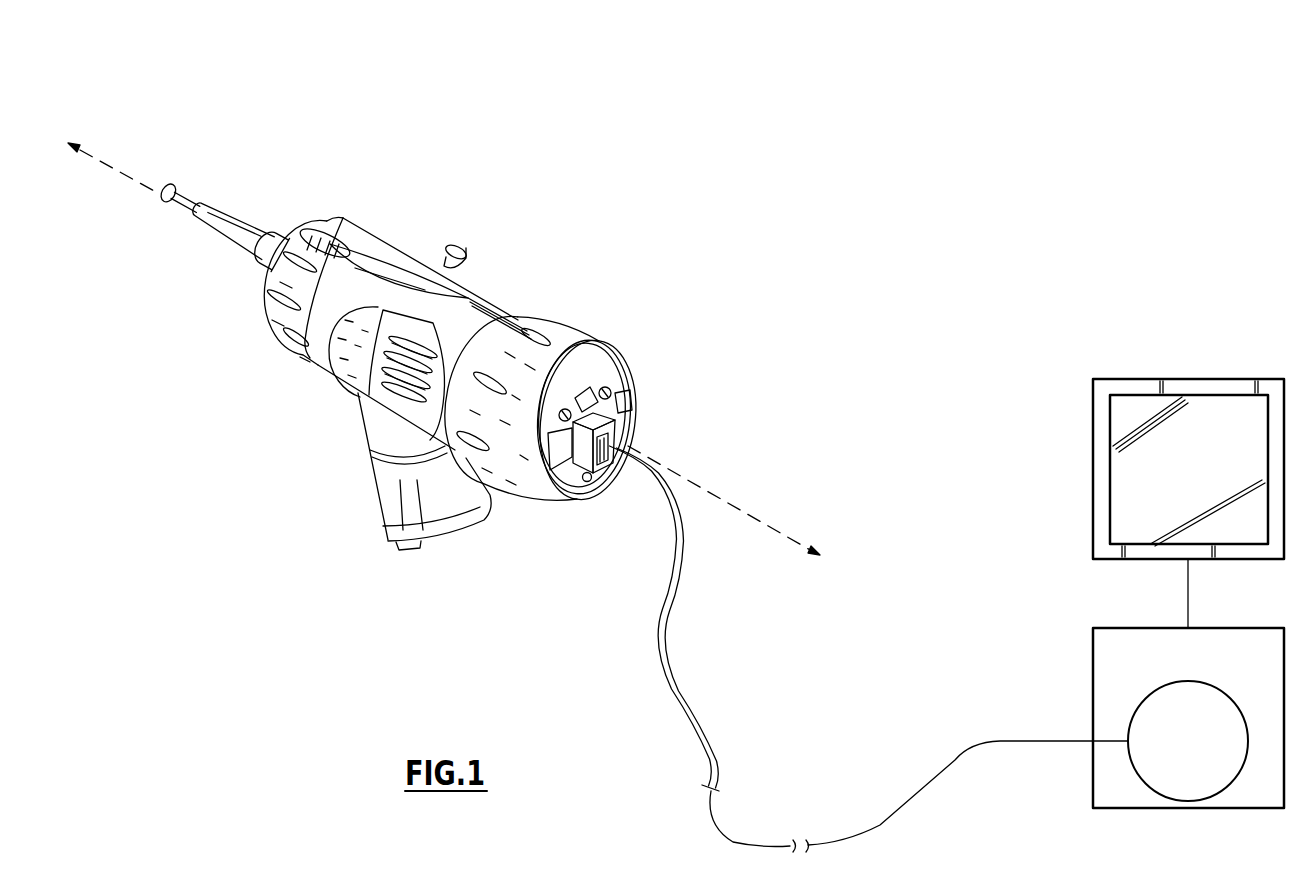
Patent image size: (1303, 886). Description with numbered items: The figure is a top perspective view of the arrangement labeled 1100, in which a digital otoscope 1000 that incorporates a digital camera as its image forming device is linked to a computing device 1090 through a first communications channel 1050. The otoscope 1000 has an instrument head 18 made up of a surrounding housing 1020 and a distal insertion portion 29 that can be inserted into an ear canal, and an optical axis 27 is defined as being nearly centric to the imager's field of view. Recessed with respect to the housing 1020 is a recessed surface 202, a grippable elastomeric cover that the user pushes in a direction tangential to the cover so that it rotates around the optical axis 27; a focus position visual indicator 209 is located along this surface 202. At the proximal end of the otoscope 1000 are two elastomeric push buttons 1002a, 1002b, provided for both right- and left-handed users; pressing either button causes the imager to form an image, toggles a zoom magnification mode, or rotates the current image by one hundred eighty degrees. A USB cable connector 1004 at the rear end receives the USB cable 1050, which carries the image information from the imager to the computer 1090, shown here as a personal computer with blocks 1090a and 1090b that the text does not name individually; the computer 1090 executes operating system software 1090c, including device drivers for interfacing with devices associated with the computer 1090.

The surgical system 1100 is at (240, 61).
The optical axis 27 is at (122, 175).
The instrument head 18 is at (399, 260).
The digital otoscope 1000 is at (530, 275).
The distal insertion portion 29 is at (256, 275).
The housing 1020 is at (330, 345).
The focus position visual indicator 209 is at (392, 392).
The recessed surface 202 is at (420, 388).
The USB cable connector 1004 is at (586, 390).
The elastomeric push button 1002a is at (554, 476).
The elastomeric push button 1002b is at (632, 420).
The USB cable 1050 is at (710, 705).
The computing device 1090 is at (1106, 593).
The controller housing 1090a is at (1157, 672).
The display 1090b is at (1157, 455).
The operating system software 1090c is at (1157, 755).